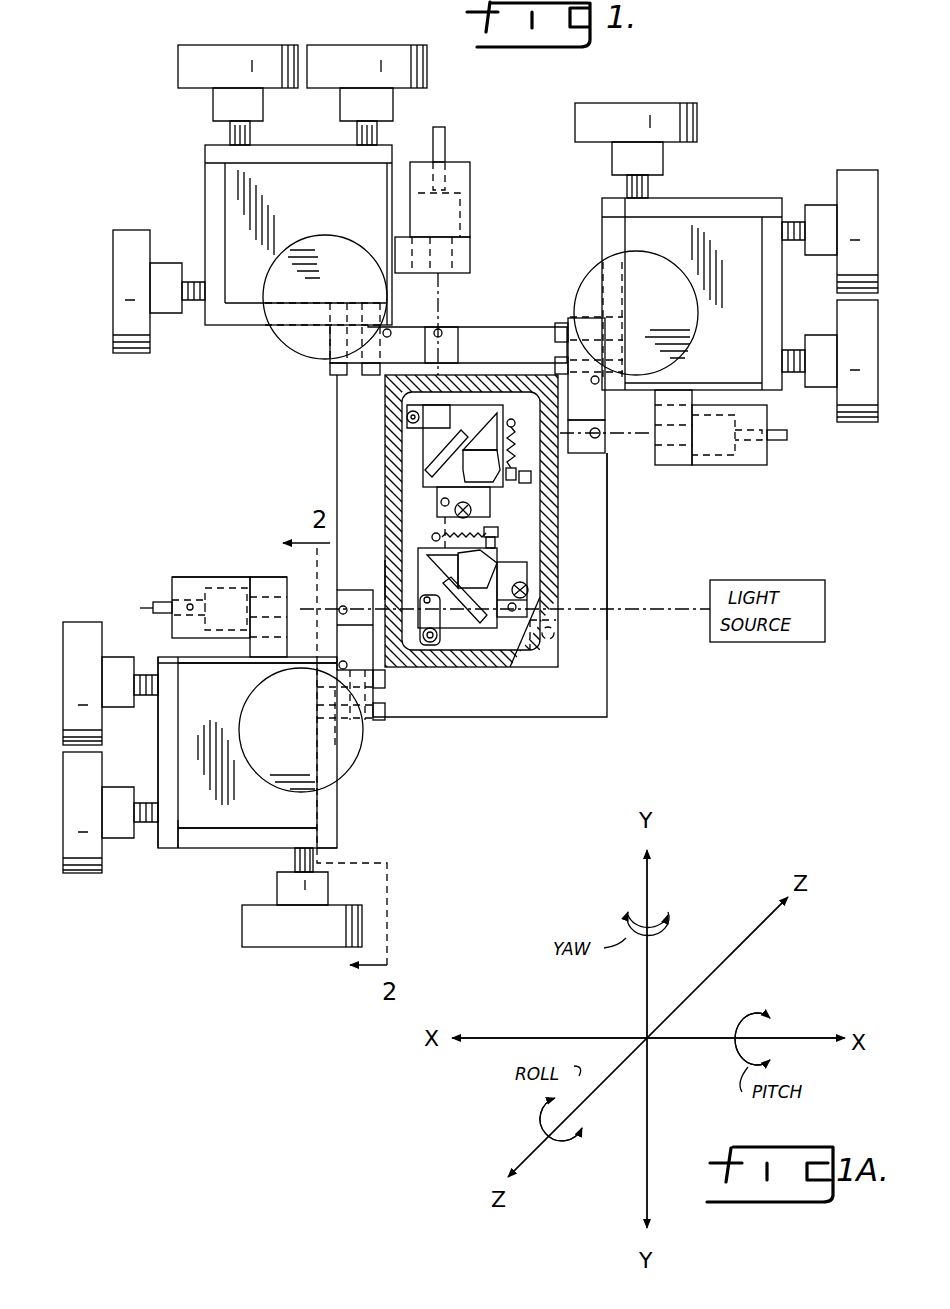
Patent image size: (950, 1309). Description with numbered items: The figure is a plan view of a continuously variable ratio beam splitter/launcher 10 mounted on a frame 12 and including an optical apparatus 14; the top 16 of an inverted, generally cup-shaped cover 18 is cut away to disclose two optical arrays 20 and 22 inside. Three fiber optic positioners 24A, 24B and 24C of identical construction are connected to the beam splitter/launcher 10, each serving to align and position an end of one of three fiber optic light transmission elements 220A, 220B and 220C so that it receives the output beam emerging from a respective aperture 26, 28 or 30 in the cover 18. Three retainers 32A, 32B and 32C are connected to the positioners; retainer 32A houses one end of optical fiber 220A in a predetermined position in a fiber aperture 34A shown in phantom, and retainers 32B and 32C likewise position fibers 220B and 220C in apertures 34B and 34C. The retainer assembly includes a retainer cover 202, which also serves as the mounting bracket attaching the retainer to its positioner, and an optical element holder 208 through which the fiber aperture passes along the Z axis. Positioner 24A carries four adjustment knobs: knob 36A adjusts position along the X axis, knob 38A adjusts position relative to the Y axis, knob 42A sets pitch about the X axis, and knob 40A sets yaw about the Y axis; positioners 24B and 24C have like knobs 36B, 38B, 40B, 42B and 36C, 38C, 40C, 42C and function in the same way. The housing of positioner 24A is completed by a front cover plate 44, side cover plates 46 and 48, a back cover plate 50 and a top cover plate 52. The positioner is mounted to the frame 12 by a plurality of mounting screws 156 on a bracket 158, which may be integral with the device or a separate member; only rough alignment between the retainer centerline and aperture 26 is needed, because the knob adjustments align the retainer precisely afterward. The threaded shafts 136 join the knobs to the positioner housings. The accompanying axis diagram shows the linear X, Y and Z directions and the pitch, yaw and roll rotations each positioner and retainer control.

The beam splitter/launcher 10 is at (612, 672).
The frame 12 is at (603, 718).
The optical apparatus 14 is at (607, 532).
The top 16 is at (530, 660).
The cover 18 is at (390, 482).
The optical array 20 is at (478, 633).
The optical array 22 is at (500, 488).
The fiber optic positioner 24A is at (165, 658).
The fiber optic positioner 24B is at (392, 147).
The fiber optic positioner 24C is at (770, 200).
The aperture 26 is at (385, 572).
The aperture 28 is at (445, 378).
The aperture 30 is at (566, 453).
The retainer 32A is at (255, 576).
The retainer 32B is at (470, 248).
The retainer 32C is at (730, 472).
The fiber aperture 34A is at (172, 576).
The aperture 34B is at (470, 178).
The aperture 34C is at (765, 455).
The adjustment knob 36A is at (300, 947).
The adjustment knob 36B is at (125, 228).
The adjustment knob 36C is at (699, 116).
The adjustment knob 38A is at (350, 778).
The adjustment knob 38B is at (300, 343).
The adjustment knob 38C is at (635, 270).
The adjustment knob 40A is at (76, 873).
The adjustment knob 40B is at (236, 52).
The adjustment knob 40C is at (858, 175).
The adjustment knob 42A is at (72, 625).
The adjustment knob 42B is at (364, 52).
The adjustment knob 42C is at (856, 423).
The front cover plate 44 is at (340, 822).
The side cover plate 46 is at (205, 662).
The side cover plate 48 is at (200, 837).
The back cover plate 50 is at (165, 850).
The top cover plate 52 is at (227, 820).
The threaded shaft 136 is at (356, 136).
The mounting screws 156 is at (385, 682).
The bracket 158 is at (385, 712).
The retainer cover 202 is at (268, 577).
The optical element holder 208 is at (180, 577).
The fiber optic light transmission element 220A is at (157, 604).
The fiber optic light transmission element 220B is at (445, 143).
The fiber optic light transmission element 220C is at (788, 438).